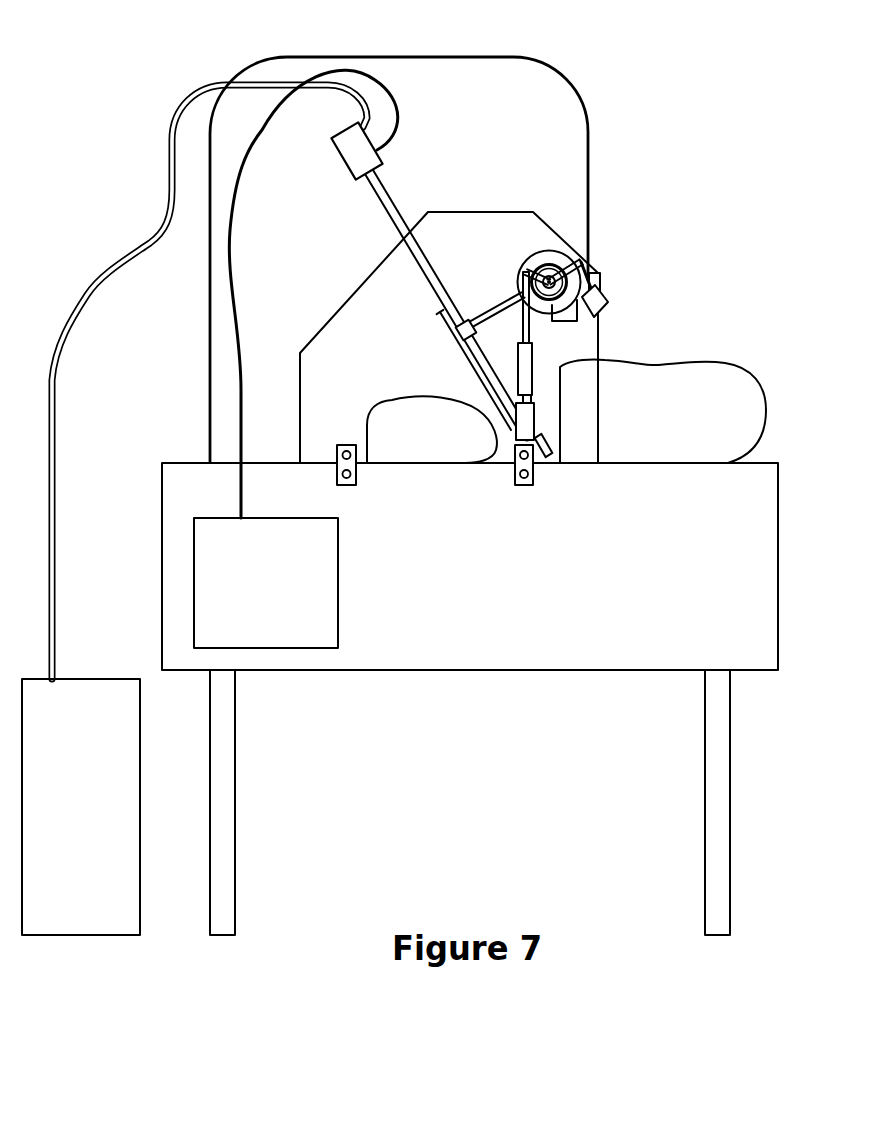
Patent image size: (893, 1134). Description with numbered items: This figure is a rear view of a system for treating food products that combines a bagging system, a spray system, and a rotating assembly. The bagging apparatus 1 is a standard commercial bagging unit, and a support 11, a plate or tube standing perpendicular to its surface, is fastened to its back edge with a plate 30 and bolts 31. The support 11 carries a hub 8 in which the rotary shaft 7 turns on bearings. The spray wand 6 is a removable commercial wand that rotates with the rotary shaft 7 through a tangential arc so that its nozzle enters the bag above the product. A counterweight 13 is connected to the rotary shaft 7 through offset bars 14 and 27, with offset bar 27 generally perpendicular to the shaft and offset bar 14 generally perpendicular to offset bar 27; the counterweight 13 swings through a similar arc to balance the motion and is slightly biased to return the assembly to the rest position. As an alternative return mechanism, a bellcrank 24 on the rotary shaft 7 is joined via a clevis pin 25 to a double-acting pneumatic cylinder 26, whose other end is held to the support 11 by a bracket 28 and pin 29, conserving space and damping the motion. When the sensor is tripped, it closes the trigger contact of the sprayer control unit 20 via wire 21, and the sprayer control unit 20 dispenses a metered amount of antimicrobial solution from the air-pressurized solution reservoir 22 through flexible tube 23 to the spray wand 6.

The bagging apparatus 1 is at (161, 487).
The spray wand 6 is at (383, 205).
The rotary shaft 7 is at (550, 270).
The hub 8 is at (515, 284).
The support 11 is at (480, 212).
The counterweight 13 is at (609, 303).
The offset bar 14 is at (601, 277).
The sprayer control unit 20 is at (339, 575).
The wire 21 is at (503, 57).
The solution reservoir 22 is at (97, 679).
The flexible tube 23 is at (81, 300).
The bellcrank 24 is at (524, 270).
The clevis pin 25 is at (522, 273).
The pneumatic cylinder 26 is at (533, 360).
The offset bar 27 is at (584, 260).
The bracket 28 is at (535, 424).
The pin 29 is at (532, 399).
The plate 30 is at (357, 480).
The bolts 31 is at (347, 486).